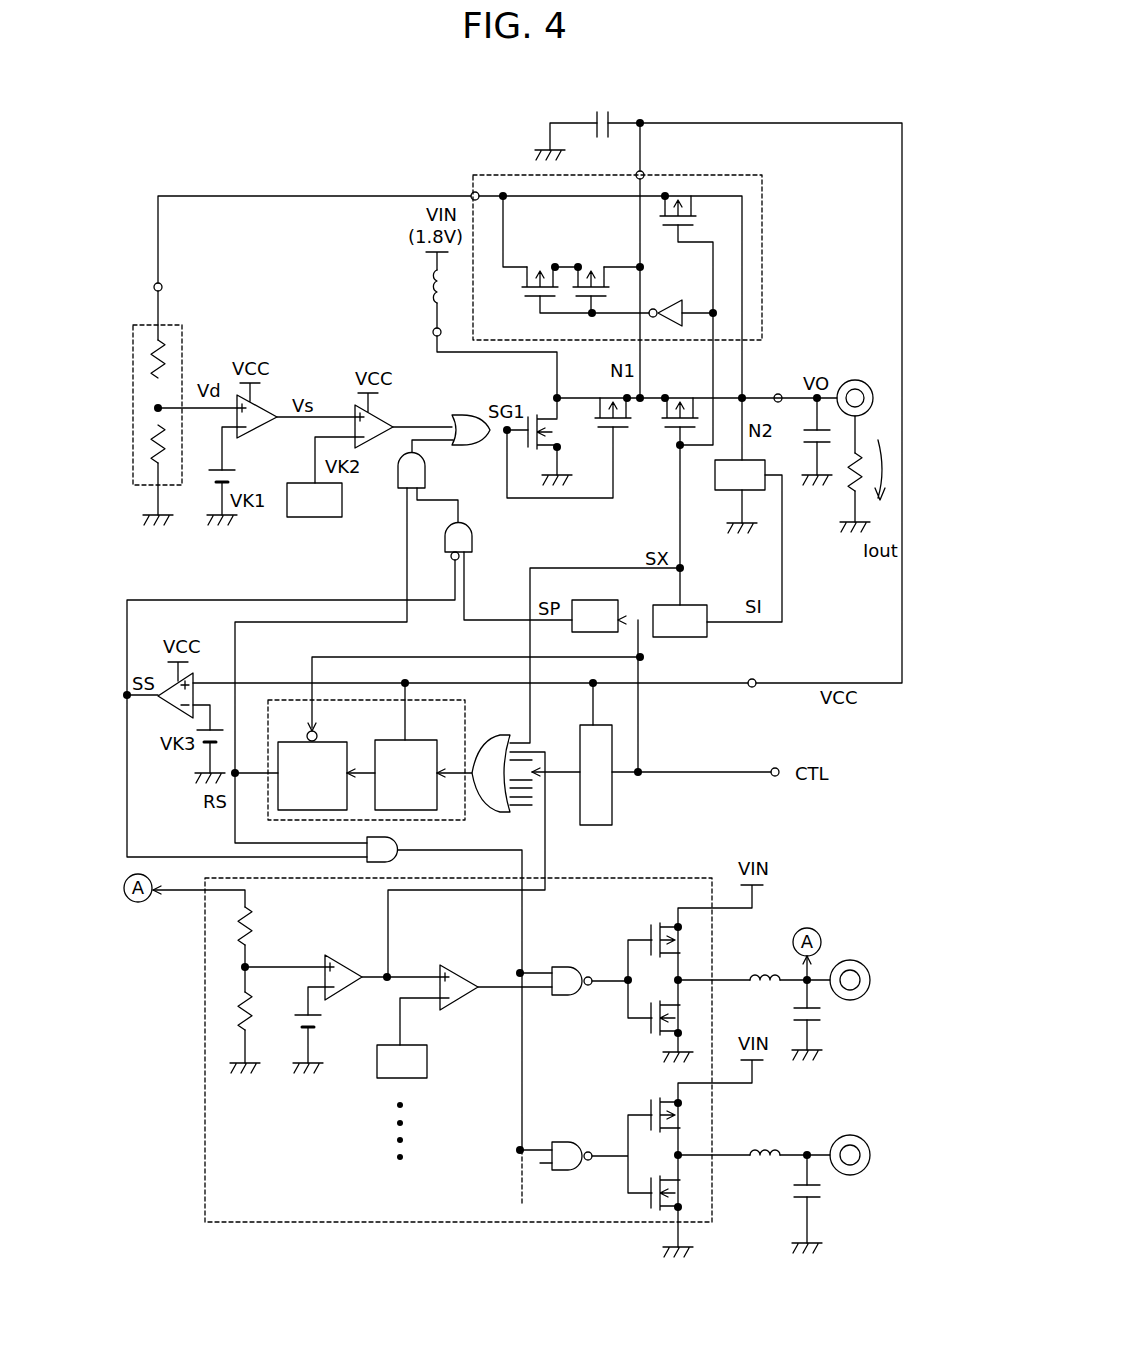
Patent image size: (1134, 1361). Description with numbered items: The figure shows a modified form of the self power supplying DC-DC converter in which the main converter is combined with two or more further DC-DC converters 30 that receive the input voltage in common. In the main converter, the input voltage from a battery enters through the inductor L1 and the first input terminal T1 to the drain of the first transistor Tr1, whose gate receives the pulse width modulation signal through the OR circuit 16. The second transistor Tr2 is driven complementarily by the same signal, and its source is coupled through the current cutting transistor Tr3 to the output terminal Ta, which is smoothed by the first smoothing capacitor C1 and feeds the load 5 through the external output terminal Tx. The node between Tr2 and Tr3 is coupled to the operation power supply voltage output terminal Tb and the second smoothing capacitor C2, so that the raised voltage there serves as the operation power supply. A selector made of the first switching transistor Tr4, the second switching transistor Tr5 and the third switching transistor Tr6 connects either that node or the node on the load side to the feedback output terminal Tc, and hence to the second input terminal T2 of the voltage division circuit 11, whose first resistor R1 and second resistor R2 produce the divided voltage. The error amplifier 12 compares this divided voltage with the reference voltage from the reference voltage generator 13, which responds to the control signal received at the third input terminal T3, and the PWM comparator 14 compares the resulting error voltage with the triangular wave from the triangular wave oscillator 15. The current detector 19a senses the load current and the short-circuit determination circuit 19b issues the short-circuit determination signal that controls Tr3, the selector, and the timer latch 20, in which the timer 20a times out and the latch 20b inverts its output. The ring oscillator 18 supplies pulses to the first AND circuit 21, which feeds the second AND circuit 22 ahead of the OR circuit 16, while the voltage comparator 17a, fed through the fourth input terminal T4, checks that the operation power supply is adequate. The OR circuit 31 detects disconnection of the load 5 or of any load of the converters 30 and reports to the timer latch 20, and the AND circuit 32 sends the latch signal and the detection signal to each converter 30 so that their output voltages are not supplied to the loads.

The voltage division circuit 11 is at (173, 336).
The first resistor R1 is at (172, 347).
The second resistor R2 is at (170, 452).
The second input terminal T2 is at (164, 283).
The error amplifier 12 is at (265, 432).
The PWM comparator 14 is at (383, 410).
The triangular wave oscillator 15 is at (314, 500).
The OR circuit 16 is at (459, 414).
The second AND circuit 22 is at (394, 489).
The first AND circuit 21 is at (475, 540).
The first transistor Tr1 is at (538, 408).
The second transistor Tr2 is at (594, 428).
The current cutting transistor Tr3 is at (662, 429).
The first switching transistor Tr4 is at (692, 220).
The second switching transistor Tr5 is at (580, 294).
The third switching transistor Tr6 is at (524, 297).
The feedback output terminal Tc is at (471, 190).
The operation power supply voltage output terminal Tb is at (646, 172).
The second smoothing capacitor C2 is at (602, 113).
The inductor L1 is at (430, 287).
The first input terminal T1 is at (432, 331).
The output terminal Ta is at (776, 394).
The first smoothing capacitor C1 is at (809, 440).
The external output terminal Tx is at (862, 380).
The load 5 is at (864, 460).
The current detector 19a is at (740, 475).
The short-circuit determination circuit 19b is at (680, 621).
The ring oscillator 18 is at (595, 616).
The reference voltage generator 13 is at (596, 775).
The fourth input terminal T4 is at (752, 688).
The third input terminal T3 is at (775, 776).
The timer latch 20 is at (475, 714).
The timer 20a is at (406, 775).
The latch 20b is at (328, 741).
The voltage comparator 17a is at (160, 698).
The OR circuit 31 is at (492, 812).
The AND circuit 32 is at (396, 841).
The DC-DC converters 30 is at (580, 948).